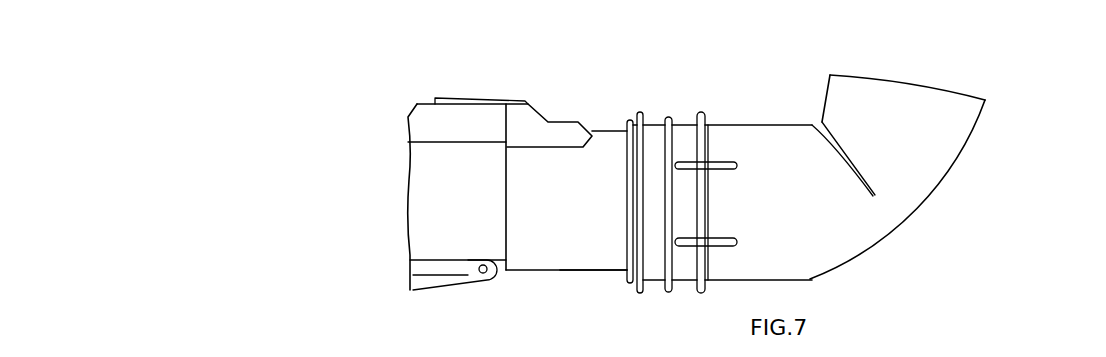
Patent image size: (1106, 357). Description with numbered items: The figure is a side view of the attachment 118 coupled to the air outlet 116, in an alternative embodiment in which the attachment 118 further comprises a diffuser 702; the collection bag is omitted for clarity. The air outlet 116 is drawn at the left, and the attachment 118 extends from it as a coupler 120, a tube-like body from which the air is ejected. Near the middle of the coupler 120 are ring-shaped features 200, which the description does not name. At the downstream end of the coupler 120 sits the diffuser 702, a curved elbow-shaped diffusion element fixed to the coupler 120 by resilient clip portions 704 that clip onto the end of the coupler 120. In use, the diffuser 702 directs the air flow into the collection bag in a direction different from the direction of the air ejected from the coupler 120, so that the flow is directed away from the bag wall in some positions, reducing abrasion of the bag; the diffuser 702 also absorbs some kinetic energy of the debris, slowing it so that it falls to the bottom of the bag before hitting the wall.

The air outlet 116 is at (427, 104).
The attachment 118 is at (564, 290).
The coupler 120 is at (608, 143).
The clamp rings 200 is at (685, 120).
The diffuser 702 is at (970, 158).
The resilient clip portions 704 is at (718, 192).